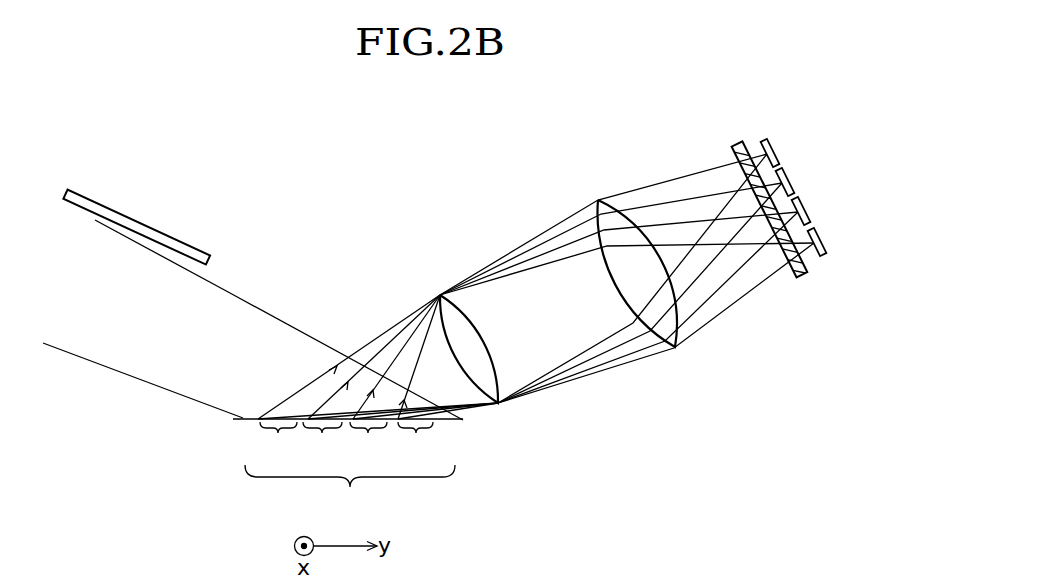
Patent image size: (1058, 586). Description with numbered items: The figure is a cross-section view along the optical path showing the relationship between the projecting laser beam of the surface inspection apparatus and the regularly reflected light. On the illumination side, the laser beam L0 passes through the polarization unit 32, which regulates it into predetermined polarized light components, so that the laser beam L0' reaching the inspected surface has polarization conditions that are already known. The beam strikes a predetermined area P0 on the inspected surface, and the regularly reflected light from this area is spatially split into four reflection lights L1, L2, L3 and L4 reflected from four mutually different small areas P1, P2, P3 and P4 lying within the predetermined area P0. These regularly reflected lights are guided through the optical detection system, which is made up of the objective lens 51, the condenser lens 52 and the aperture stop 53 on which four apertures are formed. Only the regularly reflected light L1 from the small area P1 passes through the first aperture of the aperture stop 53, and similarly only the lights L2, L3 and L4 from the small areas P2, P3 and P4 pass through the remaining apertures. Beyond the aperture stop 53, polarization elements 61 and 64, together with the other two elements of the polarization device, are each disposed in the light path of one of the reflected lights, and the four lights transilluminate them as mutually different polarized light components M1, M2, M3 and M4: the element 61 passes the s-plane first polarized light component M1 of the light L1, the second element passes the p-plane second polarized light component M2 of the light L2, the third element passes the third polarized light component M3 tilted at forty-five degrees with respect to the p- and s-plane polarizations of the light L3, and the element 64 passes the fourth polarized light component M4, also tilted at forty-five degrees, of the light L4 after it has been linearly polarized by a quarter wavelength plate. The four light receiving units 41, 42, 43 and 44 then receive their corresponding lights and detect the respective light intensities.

The polarization unit 32 is at (207, 258).
The objective lens 51 is at (483, 333).
The condenser lens 52 is at (608, 222).
The aperture stop 53 is at (735, 140).
The polarization element 64 is at (750, 150).
The polarization element 61 is at (792, 276).
The light receiving unit 41 is at (825, 240).
The light receiving unit 42 is at (807, 205).
The light receiving unit 43 is at (786, 170).
The light receiving unit 44 is at (771, 141).
The first polarized light component M1 is at (854, 260).
The second polarized light component M2 is at (855, 192).
The third polarized light component M3 is at (839, 158).
The fourth polarized light component M4 is at (815, 121).
The laser beam L0 is at (162, 233).
The laser beam L0' is at (346, 333).
The regularly reflected light L1 is at (362, 357).
The regularly reflected light L2 is at (392, 348).
The regularly reflected light L3 is at (415, 343).
The regularly reflected light L4 is at (438, 342).
The predetermined area P0 is at (350, 493).
The small area P1 is at (278, 444).
The small area P2 is at (322, 444).
The small area P3 is at (368, 444).
The small area P4 is at (415, 444).